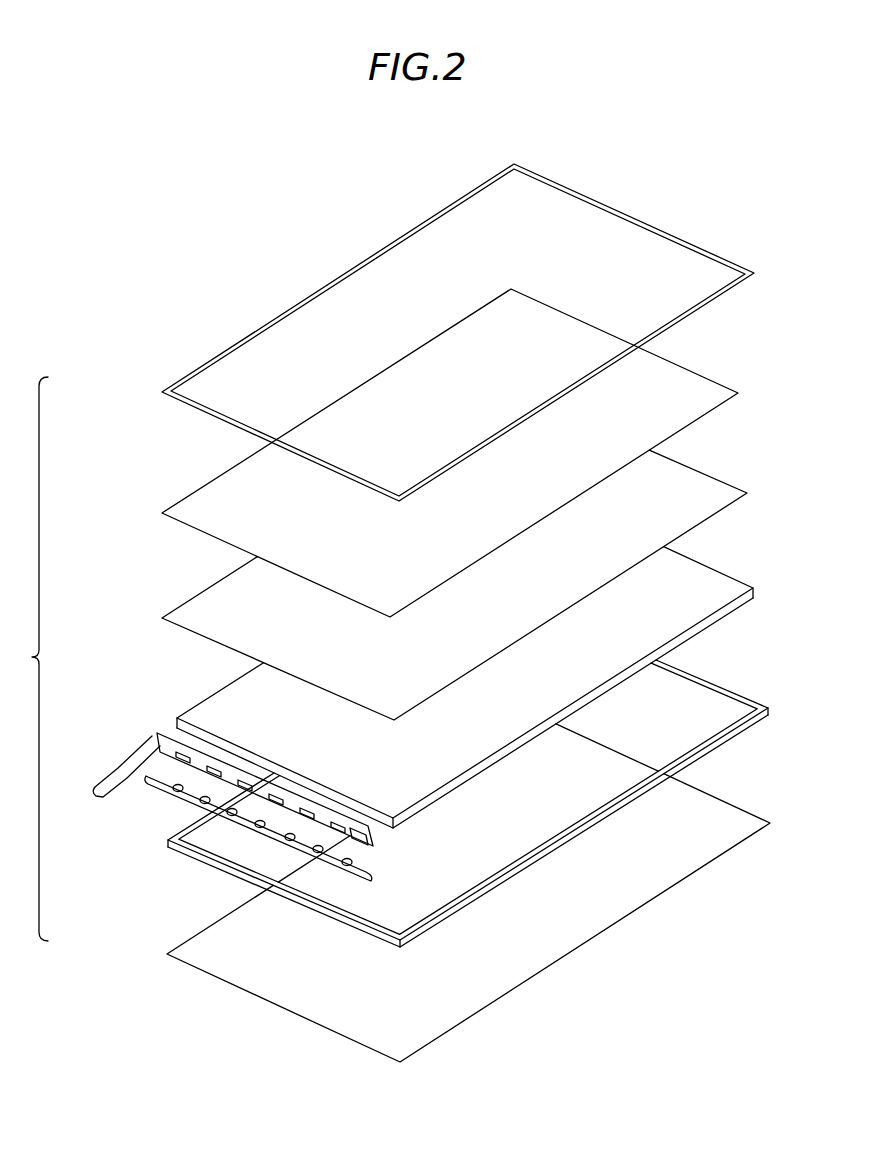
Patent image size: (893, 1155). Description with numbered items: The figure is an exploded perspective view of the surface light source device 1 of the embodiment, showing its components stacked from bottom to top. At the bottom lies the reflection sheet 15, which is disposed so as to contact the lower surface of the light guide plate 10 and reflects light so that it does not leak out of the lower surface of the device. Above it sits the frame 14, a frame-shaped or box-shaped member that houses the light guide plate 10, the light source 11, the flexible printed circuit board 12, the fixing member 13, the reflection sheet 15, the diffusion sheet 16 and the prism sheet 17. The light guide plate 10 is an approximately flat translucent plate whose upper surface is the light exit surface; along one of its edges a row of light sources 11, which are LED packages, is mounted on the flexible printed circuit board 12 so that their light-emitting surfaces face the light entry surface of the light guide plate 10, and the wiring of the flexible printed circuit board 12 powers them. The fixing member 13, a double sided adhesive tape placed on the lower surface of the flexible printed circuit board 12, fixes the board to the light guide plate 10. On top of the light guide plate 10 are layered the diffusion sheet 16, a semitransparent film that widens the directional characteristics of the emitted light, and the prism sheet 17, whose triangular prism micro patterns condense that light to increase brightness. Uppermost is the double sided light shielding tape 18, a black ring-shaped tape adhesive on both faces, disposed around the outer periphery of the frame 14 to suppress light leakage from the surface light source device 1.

The surface light source device 1 is at (33, 659).
The light guide plate 10 is at (236, 701).
The light source 11 is at (132, 752).
The flexible printed circuit board 12 is at (156, 734).
The fixing member 13 is at (152, 790).
The frame 14 is at (166, 848).
The reflection sheet 15 is at (225, 932).
The diffusion sheet 16 is at (207, 607).
The prism sheet 17 is at (228, 502).
The double sided light shielding tape 18 is at (160, 392).